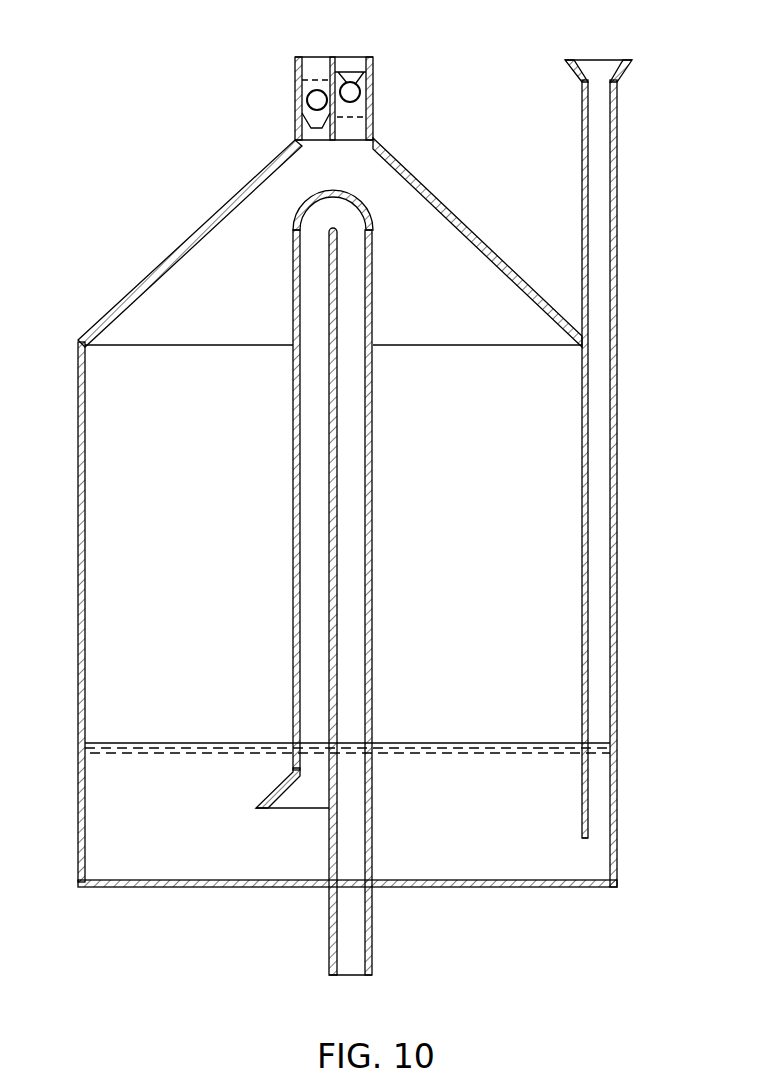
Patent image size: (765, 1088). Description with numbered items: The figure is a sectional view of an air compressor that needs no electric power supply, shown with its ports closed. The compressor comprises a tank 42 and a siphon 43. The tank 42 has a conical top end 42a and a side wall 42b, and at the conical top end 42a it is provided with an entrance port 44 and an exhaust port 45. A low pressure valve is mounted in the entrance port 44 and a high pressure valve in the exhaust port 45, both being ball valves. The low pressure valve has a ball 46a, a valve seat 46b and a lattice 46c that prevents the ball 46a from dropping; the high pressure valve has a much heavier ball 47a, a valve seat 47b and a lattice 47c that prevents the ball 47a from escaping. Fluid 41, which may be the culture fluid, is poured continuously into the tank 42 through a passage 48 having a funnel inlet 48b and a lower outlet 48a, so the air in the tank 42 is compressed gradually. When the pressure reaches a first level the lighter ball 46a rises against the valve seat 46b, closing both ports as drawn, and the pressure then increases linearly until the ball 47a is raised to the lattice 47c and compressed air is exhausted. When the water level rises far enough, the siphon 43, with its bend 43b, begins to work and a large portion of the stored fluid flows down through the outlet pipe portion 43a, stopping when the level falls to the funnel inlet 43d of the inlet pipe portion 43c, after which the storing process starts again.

The fluid 41 is at (457, 766).
The tank 42 is at (317, 512).
The conical top end 42a is at (450, 212).
The side wall of tank 42b is at (88, 634).
The siphon 43 is at (334, 581).
The outlet pipe portion 43a is at (357, 918).
The bend of siphon pipe 43b is at (303, 204).
The inlet pipe portion 43c is at (295, 506).
The funnel inlet 43d is at (292, 800).
The entrance port 44 is at (388, 78).
The exhaust port 45 is at (306, 73).
The ball 46a is at (356, 97).
The valve seat 46b is at (368, 78).
The lattice 46c is at (368, 127).
The ball 47a is at (313, 100).
The valve seat 47b is at (302, 116).
The lattice 47c is at (302, 80).
The passage 48 is at (622, 446).
The lower outlet 48a is at (600, 832).
The funnel inlet 48b is at (610, 66).